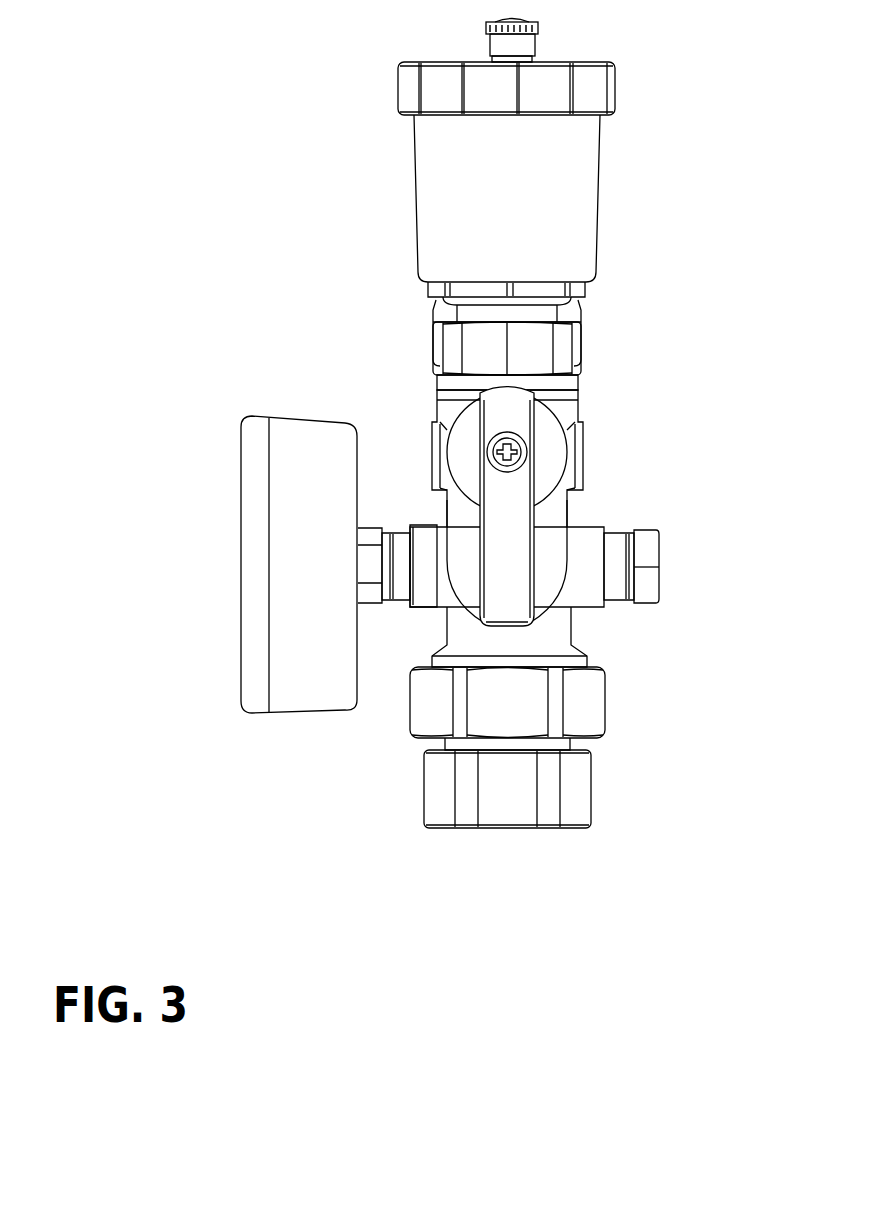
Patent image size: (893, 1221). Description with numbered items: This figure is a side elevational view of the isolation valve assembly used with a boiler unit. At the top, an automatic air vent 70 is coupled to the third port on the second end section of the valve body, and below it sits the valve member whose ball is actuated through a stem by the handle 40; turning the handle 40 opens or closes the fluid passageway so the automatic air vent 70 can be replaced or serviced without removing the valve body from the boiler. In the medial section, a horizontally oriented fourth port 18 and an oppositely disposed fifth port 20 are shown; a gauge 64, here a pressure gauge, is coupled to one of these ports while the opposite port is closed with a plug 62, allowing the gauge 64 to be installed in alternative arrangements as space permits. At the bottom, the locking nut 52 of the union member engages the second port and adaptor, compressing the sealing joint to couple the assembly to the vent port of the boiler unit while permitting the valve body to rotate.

The fourth port 18 is at (428, 536).
The fifth port 20 is at (586, 544).
The handle 40 is at (518, 527).
The locking nut 52 is at (577, 698).
The plug 62 is at (652, 582).
The gauge 64 is at (297, 542).
The automatic air vent 70 is at (563, 205).